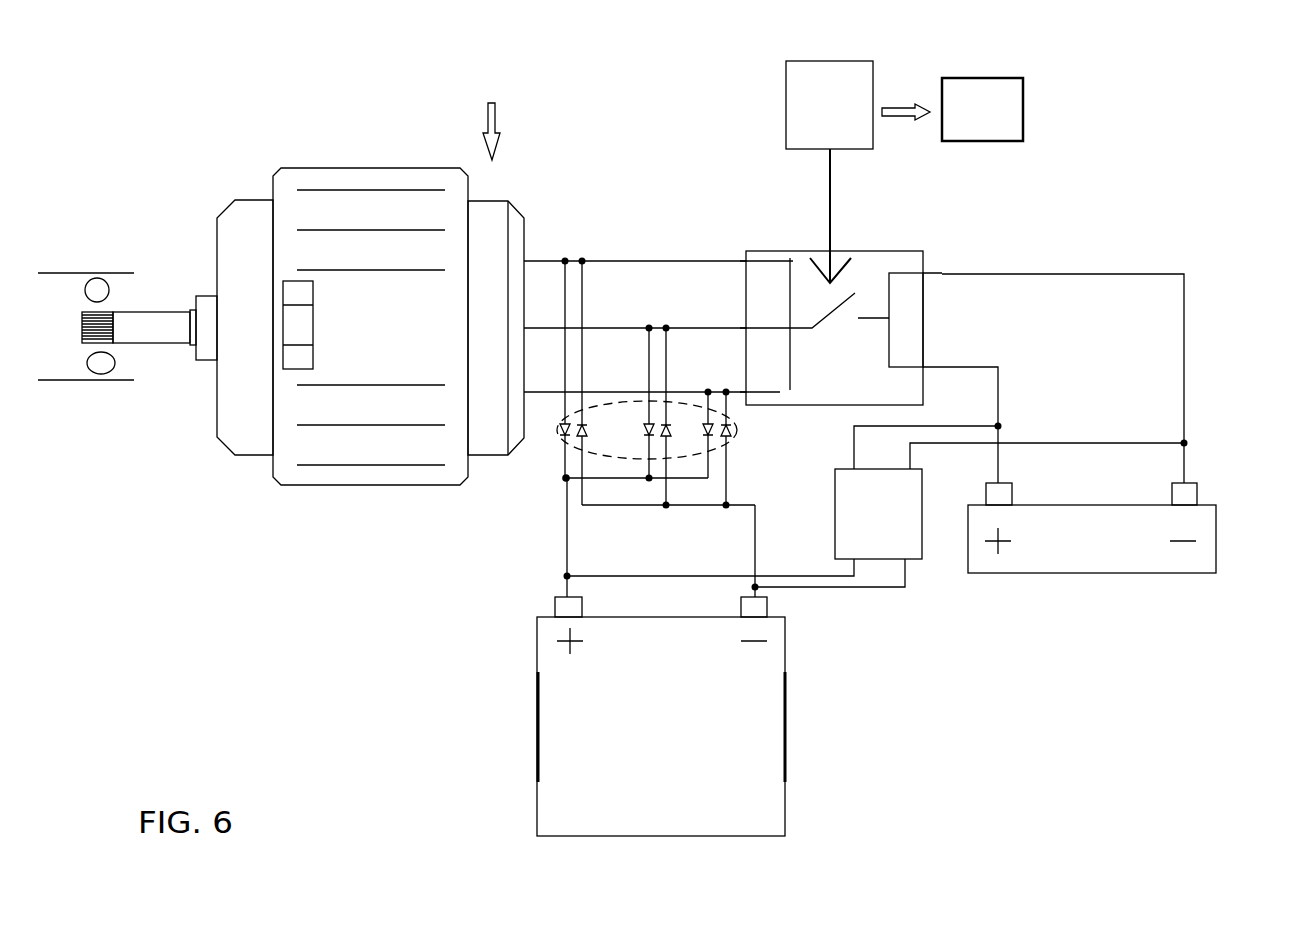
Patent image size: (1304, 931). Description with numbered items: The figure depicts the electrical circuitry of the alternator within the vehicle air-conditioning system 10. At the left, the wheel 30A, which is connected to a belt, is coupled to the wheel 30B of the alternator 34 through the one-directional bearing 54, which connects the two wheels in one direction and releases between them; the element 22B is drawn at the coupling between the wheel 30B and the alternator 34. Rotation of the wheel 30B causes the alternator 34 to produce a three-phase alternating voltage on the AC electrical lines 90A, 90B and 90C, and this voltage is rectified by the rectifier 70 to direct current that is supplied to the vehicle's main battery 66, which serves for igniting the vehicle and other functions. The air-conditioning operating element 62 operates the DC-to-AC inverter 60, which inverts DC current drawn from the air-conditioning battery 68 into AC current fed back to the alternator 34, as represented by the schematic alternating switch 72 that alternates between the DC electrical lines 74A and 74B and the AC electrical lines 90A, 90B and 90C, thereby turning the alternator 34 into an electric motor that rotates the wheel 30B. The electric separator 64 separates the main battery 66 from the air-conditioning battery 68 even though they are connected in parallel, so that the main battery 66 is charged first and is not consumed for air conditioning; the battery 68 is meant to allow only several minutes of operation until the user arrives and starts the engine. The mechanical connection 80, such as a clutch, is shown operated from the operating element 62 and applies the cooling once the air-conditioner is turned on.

The vehicle air-conditioning system 10 is at (485, 118).
The coupling 22B is at (203, 283).
The wheel 30A is at (57, 313).
The wheel 30B is at (153, 330).
The alternator 34 is at (415, 340).
The one-directional bearing 54 is at (98, 279).
The DC-to-AC inverter 60 is at (905, 251).
The air-conditioning operating element 62 is at (786, 113).
The electric separator 64 is at (835, 514).
The main battery 66 is at (770, 797).
The air-conditioning battery 68 is at (1216, 533).
The rectifier 70 is at (560, 432).
The schematic alternating switch 72 is at (840, 318).
The DC electrical line 74A is at (1002, 274).
The DC electrical line 74B is at (968, 367).
The mechanical connection 80 is at (1000, 103).
The AC electrical line 90A is at (686, 260).
The AC electrical line 90B is at (692, 329).
The AC electrical line 90C is at (682, 392).